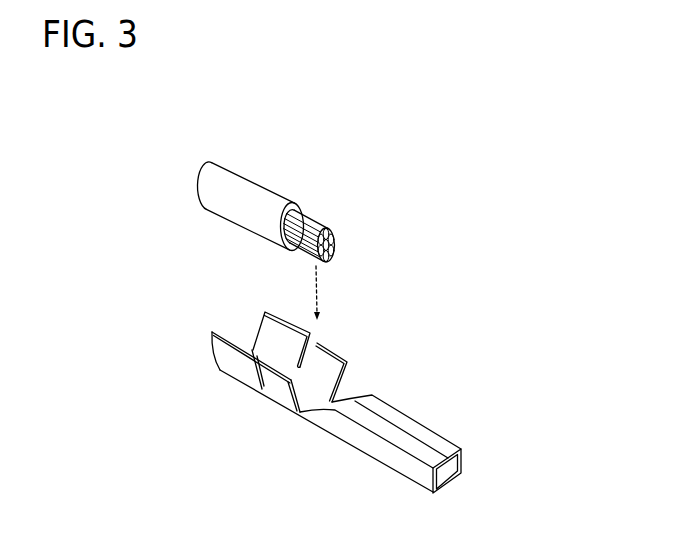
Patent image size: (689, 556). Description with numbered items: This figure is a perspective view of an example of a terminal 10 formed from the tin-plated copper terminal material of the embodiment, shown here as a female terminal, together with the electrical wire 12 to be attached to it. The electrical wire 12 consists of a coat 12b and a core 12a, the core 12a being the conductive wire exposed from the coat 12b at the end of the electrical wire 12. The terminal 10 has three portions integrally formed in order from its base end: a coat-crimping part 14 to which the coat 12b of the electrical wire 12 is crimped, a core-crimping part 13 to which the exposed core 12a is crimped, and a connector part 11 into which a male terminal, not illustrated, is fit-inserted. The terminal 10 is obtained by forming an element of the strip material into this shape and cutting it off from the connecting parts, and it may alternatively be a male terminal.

The terminal 10 is at (320, 402).
The connector part 11 is at (425, 437).
The electrical wire 12 is at (311, 213).
The core 12a is at (338, 237).
The coat 12b is at (230, 203).
The core-crimping part 13 is at (332, 343).
The coat-crimping part 14 is at (220, 349).